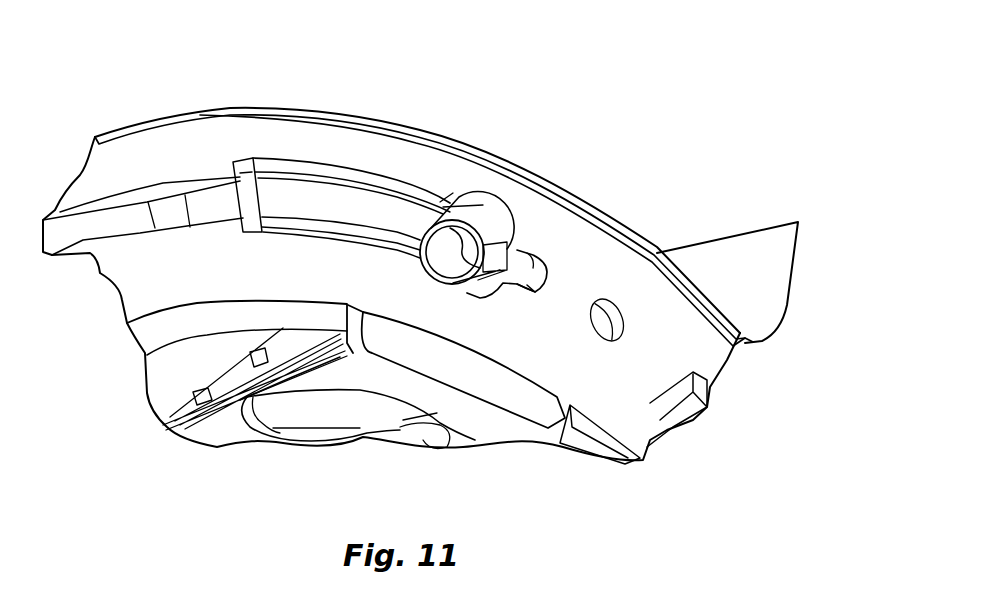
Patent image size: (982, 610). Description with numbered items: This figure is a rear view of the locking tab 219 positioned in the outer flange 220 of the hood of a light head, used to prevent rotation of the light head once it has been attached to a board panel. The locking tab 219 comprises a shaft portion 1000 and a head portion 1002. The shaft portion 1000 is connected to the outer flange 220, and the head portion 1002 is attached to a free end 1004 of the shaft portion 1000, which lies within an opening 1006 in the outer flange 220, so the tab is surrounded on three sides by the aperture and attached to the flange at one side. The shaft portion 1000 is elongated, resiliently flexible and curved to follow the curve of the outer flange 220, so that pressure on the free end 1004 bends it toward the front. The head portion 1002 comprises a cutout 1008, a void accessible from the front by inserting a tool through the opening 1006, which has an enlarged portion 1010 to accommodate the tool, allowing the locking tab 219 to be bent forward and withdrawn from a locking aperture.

The locking tab 219 is at (400, 193).
The outer flange 220 is at (140, 145).
The shaft portion 1000 is at (310, 197).
The head portion 1002 is at (490, 213).
The free end 1004 is at (450, 210).
The opening 1006 is at (305, 232).
The cutout 1008 is at (507, 255).
The enlarged portion 1010 is at (532, 283).